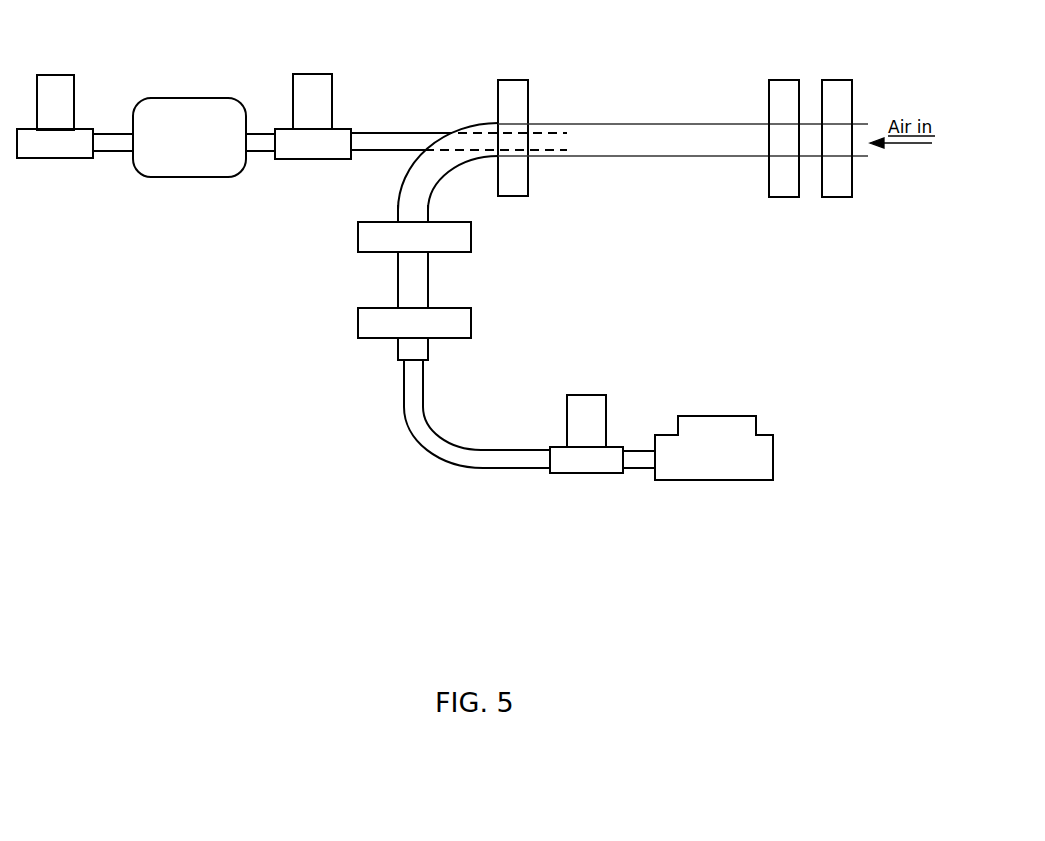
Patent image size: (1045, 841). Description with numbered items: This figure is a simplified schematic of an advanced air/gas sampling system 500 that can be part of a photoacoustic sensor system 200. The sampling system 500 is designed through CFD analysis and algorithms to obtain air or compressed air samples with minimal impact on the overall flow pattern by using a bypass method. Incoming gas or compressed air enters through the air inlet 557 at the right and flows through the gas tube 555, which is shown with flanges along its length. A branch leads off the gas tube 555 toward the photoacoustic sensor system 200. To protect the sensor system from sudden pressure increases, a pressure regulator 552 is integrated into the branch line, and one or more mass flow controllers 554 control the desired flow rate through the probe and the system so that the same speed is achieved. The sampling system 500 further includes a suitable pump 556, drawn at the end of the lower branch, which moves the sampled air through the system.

The air/gas sampling system 500 is at (173, 436).
The photoacoustic sensor system 200 is at (204, 108).
The pressure regulator 552 is at (75, 93).
The mass flow controller 554 is at (449, 273).
The gas tube 555 is at (609, 270).
The pump 556 is at (714, 466).
The air inlet 557 is at (818, 121).